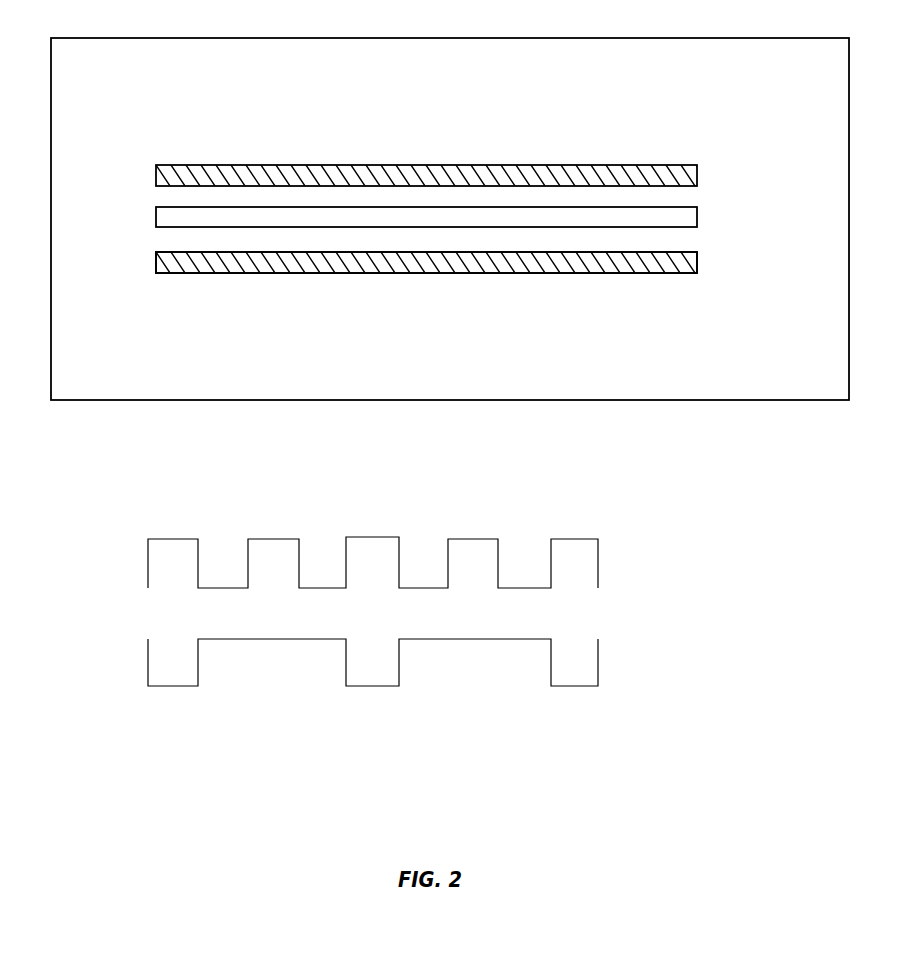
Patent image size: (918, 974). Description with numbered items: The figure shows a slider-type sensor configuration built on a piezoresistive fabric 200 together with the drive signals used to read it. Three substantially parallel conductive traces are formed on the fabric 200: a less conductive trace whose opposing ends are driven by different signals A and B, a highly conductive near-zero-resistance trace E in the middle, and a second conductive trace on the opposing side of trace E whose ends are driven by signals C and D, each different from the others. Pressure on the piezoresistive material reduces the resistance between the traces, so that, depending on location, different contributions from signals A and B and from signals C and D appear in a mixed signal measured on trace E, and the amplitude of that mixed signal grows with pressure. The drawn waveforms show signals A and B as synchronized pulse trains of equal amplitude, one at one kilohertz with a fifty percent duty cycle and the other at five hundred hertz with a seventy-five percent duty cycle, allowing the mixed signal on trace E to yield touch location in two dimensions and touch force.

The piezoresistive fabric 200 is at (440, 204).
The signal A is at (442, 354).
The signal B is at (448, 408).
The signal C is at (425, 283).
The signal D is at (429, 284).
The highly conductive trace E is at (414, 219).